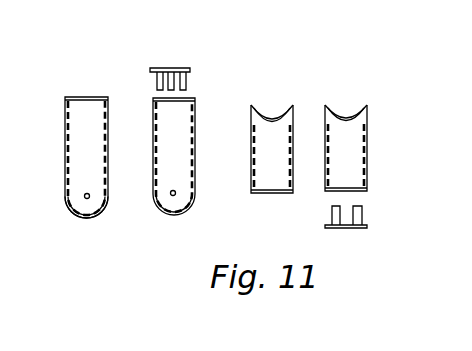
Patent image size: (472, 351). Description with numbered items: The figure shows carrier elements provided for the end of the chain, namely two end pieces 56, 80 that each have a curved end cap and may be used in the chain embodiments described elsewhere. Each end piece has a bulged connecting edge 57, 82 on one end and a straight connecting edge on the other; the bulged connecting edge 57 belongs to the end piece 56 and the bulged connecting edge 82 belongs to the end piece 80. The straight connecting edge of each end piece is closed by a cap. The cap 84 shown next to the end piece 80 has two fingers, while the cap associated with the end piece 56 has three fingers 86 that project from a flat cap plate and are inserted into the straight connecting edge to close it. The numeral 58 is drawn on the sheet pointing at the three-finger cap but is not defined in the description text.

The end piece 56 is at (82, 128).
The bulged connecting edge 57 is at (98, 212).
The cap assembly 58 is at (168, 58).
The end piece 80 is at (314, 134).
The bulged connecting edge 82 is at (270, 117).
The cap 84 is at (367, 227).
The fingers 86 is at (158, 83).